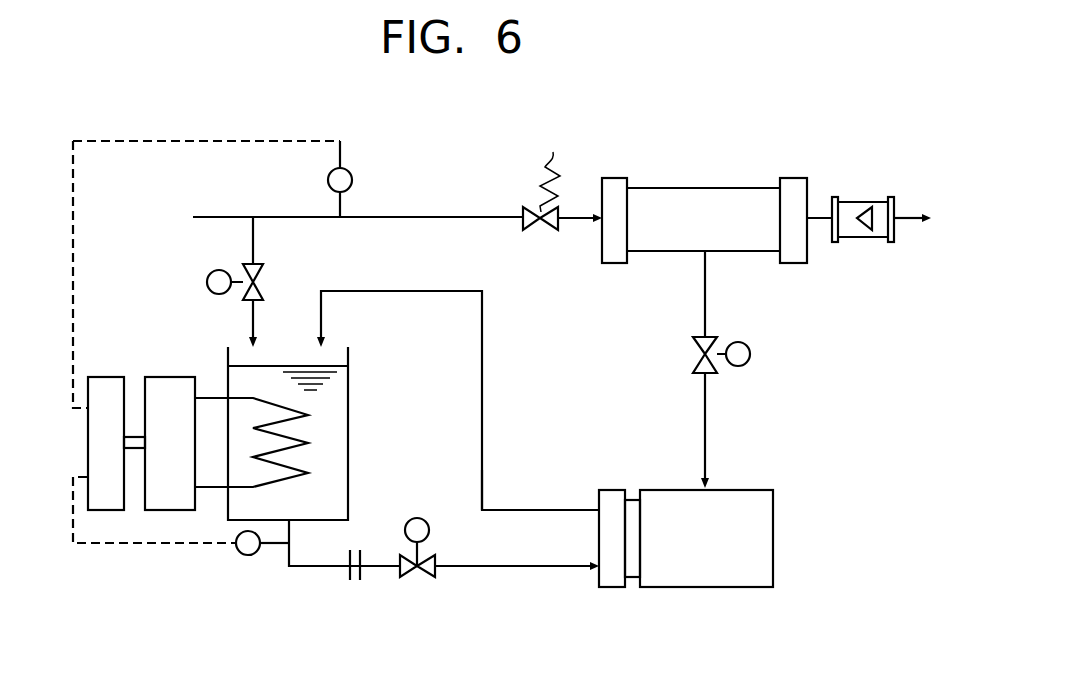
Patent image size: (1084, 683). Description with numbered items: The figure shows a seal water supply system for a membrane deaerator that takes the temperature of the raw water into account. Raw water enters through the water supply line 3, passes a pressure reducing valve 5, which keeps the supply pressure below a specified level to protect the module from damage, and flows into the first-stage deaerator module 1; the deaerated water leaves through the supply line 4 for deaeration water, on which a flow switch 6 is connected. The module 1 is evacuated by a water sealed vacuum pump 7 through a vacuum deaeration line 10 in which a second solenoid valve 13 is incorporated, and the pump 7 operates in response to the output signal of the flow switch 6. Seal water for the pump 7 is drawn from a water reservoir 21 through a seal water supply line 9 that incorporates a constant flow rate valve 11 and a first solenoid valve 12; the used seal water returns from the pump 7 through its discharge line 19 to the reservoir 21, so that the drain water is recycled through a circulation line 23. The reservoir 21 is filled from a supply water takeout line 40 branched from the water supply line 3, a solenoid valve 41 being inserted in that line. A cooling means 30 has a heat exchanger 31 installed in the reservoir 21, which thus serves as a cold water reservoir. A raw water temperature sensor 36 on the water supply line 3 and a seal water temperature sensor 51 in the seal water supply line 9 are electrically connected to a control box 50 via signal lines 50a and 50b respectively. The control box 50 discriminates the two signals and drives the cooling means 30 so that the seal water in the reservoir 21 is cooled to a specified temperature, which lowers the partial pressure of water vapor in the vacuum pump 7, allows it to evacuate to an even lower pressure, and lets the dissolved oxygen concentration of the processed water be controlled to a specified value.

The first-stage deaerator module 1 is at (714, 176).
The water supply line 3 is at (272, 217).
The supply line for deaeration water 4 is at (905, 215).
The pressure reducing valve 5 is at (562, 177).
The flow switch 6 is at (862, 200).
The water sealed vacuum pump 7 is at (728, 598).
The seal water supply line 9 is at (540, 568).
The vacuum deaeration line 10 is at (705, 290).
The constant flow rate valve 11 is at (355, 582).
The first solenoid valve 12 is at (417, 518).
The second solenoid valve 13 is at (750, 354).
The discharge line 19 is at (482, 393).
The water reservoir 21 is at (228, 352).
The circulation line 23 is at (461, 553).
The cooling means 30 is at (165, 510).
The heat exchanger 31 is at (243, 487).
The raw water temperature sensor 36 is at (378, 168).
The supply water takeout line 40 is at (253, 242).
The solenoid valve 41 is at (207, 282).
The control box 50 is at (105, 377).
The signal line 50a is at (188, 141).
The signal line 50b is at (120, 543).
The seal water temperature sensor 51 is at (248, 555).